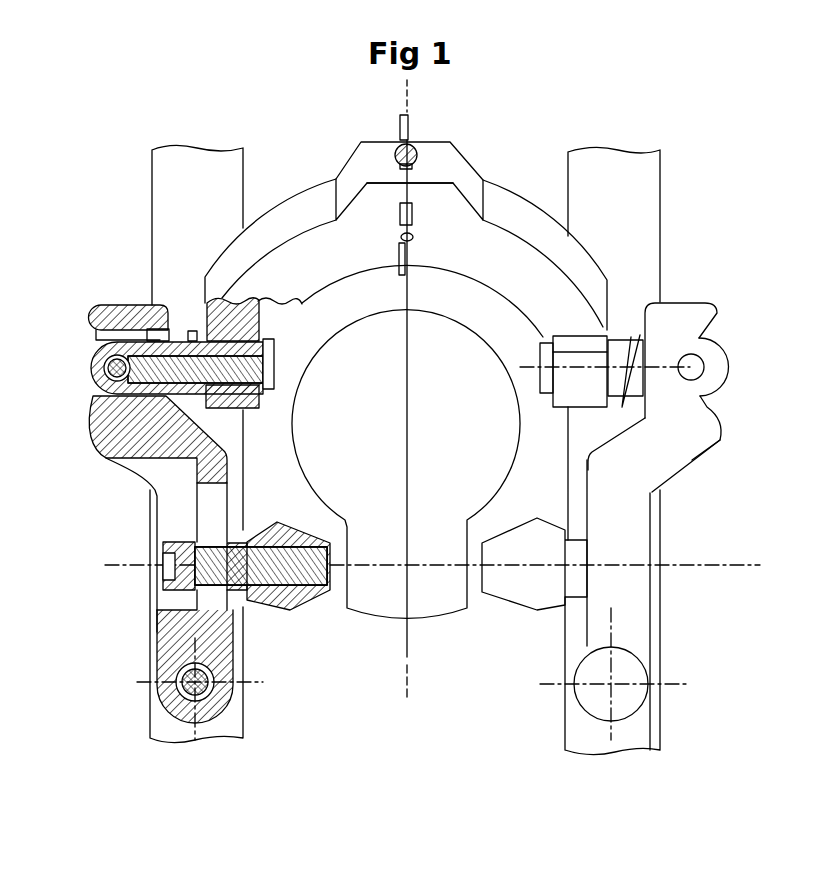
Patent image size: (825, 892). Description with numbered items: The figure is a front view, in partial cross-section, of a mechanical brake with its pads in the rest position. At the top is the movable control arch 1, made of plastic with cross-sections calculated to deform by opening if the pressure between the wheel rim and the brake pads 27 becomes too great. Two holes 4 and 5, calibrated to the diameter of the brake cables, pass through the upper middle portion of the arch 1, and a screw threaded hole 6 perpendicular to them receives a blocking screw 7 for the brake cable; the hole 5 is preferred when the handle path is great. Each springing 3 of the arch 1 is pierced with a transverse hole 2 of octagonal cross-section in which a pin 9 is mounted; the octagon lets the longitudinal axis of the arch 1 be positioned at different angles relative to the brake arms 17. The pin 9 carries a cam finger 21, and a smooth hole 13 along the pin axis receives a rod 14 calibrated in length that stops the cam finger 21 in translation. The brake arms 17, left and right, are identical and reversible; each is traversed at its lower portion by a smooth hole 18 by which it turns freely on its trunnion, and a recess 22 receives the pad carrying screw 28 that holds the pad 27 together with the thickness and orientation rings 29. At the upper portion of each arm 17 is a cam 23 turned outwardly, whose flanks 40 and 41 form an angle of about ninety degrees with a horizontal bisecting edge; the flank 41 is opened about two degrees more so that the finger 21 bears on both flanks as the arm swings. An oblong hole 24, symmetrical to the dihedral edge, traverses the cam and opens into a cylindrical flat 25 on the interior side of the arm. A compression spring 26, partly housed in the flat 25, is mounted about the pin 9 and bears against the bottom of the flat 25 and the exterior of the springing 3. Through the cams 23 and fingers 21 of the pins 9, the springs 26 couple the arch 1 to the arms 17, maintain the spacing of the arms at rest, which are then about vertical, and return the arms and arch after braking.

The movable control arch 1 is at (516, 174).
The transverse hole 2 is at (250, 406).
The springing 3 is at (262, 326).
The hole 4 is at (405, 275).
The hole 5 is at (404, 205).
The screw threaded hole 6 is at (412, 178).
The blocking screw 7 is at (415, 160).
The pin 9 is at (732, 350).
The smooth hole 13 is at (115, 432).
The rod 14 is at (162, 438).
The brake arm 17 is at (662, 578).
The smooth hole 18 is at (200, 712).
The cam finger 21 is at (106, 380).
The recess 22 is at (170, 608).
The cam 23 is at (713, 402).
The oblong hole 24 is at (106, 307).
The cylindrical flat 25 is at (150, 306).
The compression spring 26 is at (637, 333).
The brake pad 27 is at (328, 594).
The pad carrying screw 28 is at (276, 608).
The thickness and orientation rings 29 is at (247, 532).
The flank 40 is at (707, 307).
The flank 41 is at (718, 410).